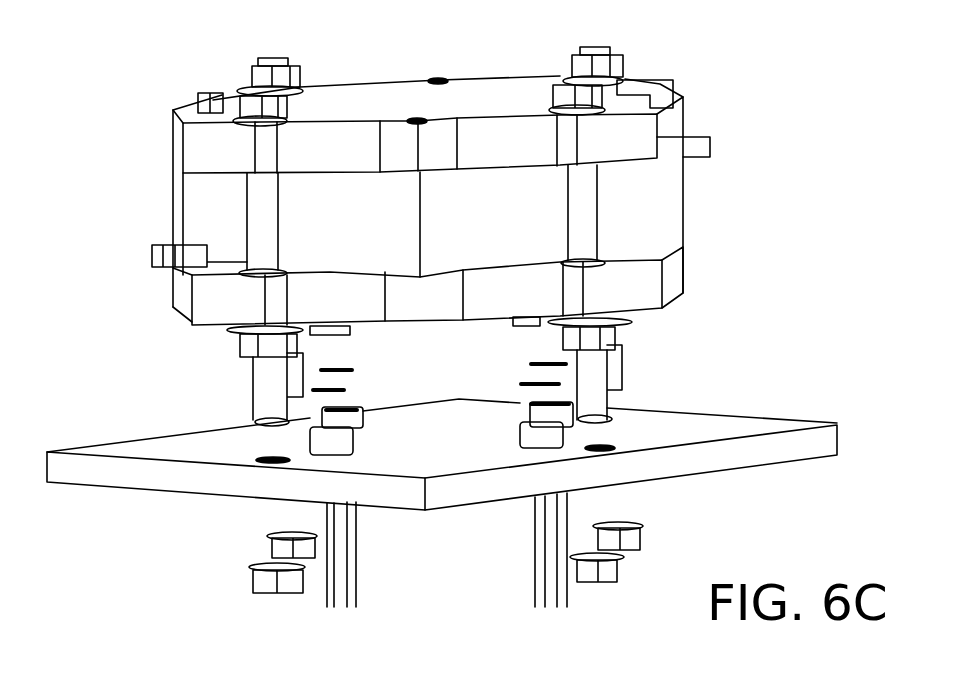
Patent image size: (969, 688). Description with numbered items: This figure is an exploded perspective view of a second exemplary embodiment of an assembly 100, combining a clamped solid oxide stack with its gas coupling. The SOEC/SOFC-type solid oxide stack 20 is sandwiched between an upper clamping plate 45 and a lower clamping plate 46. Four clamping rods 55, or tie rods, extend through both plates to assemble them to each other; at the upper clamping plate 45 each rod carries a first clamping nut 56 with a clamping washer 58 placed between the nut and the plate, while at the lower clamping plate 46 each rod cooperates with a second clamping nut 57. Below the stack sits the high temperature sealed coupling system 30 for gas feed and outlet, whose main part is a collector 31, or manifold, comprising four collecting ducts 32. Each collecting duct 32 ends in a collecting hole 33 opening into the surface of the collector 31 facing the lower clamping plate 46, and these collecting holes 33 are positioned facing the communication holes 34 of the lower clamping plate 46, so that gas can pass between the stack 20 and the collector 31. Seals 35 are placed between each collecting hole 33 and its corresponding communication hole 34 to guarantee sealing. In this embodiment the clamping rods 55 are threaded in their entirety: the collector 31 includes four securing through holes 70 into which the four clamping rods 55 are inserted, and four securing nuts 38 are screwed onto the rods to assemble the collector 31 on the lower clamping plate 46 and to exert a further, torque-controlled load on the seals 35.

The assembly 100 is at (812, 107).
The SOEC/SOFC-type solid oxide stack 20 is at (193, 200).
The high temperature sealed coupling system 30 is at (48, 492).
The collector 31 is at (100, 472).
The collecting ducts 32 is at (322, 512).
The collecting holes 33 is at (365, 410).
The communication holes 34 is at (353, 333).
The seals 35 is at (355, 369).
The securing nuts 38 is at (255, 572).
The upper clamping plate 45 is at (200, 143).
The lower clamping plate 46 is at (207, 297).
The clamping rods 55 is at (263, 228).
The first clamping nut 56 is at (252, 68).
The second clamping nut 57 is at (245, 345).
The clamping washer 58 is at (218, 335).
The securing through holes 70 is at (272, 455).